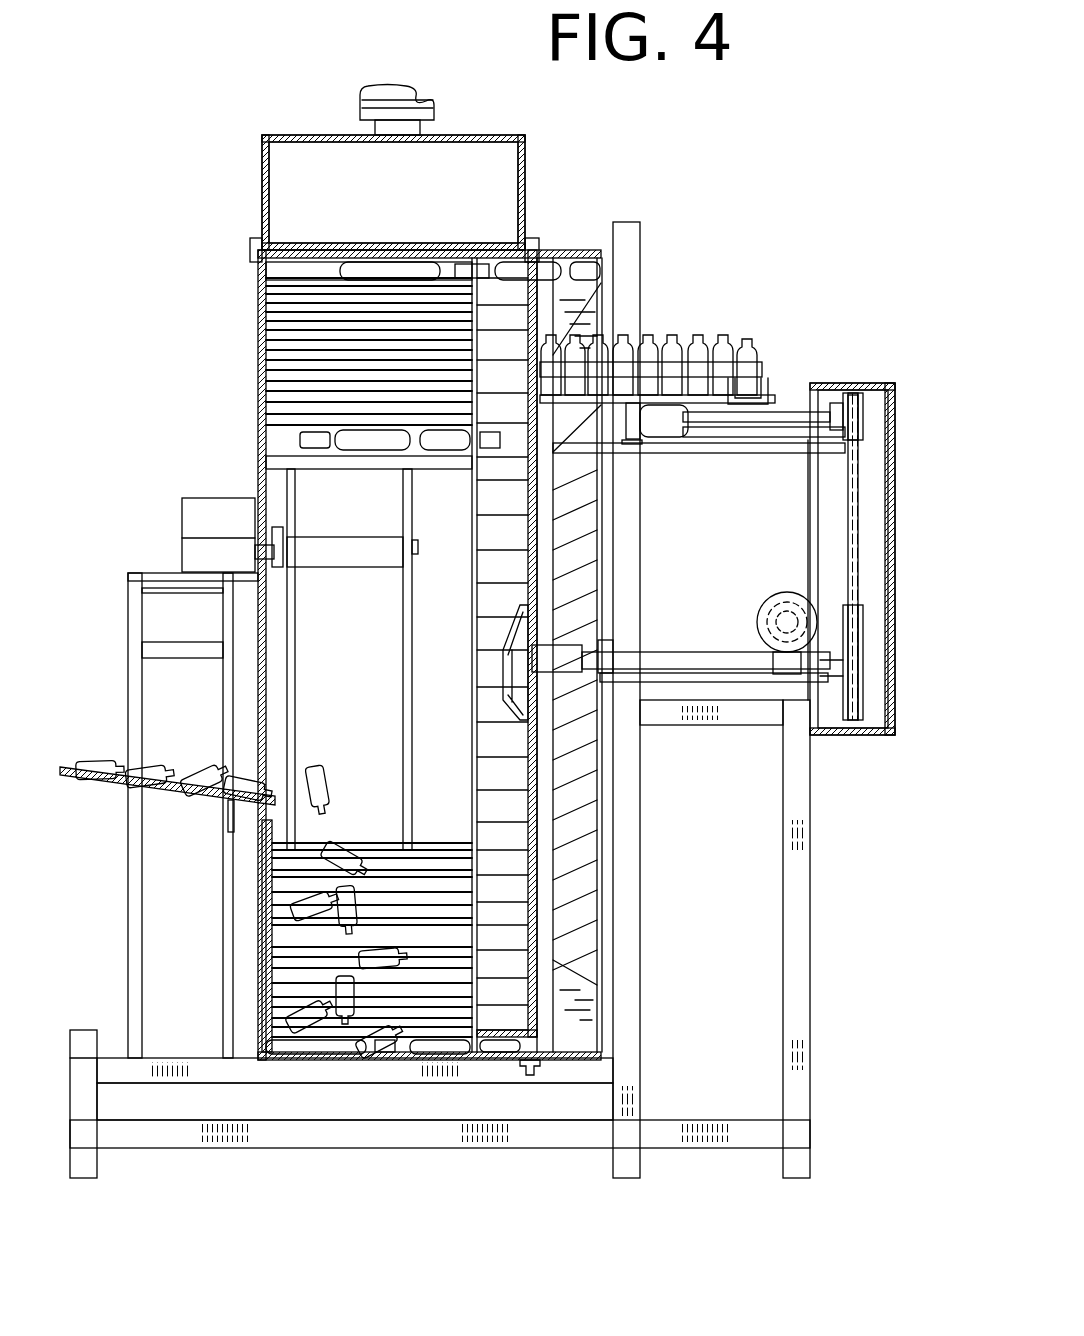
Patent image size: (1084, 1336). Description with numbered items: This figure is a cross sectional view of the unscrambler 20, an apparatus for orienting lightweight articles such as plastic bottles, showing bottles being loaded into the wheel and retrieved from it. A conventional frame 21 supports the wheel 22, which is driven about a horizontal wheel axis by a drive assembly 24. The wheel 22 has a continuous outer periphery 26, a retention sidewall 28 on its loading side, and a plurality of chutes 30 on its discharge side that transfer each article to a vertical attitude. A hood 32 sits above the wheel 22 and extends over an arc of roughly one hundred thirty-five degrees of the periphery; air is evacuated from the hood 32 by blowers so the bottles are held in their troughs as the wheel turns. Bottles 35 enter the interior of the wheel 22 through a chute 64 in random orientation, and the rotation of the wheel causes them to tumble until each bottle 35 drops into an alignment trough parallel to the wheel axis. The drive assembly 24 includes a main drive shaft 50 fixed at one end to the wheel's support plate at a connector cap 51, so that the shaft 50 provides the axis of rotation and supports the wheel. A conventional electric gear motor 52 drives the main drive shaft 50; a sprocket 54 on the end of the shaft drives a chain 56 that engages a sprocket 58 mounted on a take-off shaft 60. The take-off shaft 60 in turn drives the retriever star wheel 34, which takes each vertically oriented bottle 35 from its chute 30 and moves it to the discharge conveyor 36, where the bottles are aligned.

The unscrambler 20 is at (260, 182).
The frame 21 is at (810, 838).
The wheel 22 is at (256, 304).
The drive assembly 24 is at (774, 588).
The outer periphery 26 is at (398, 250).
The retention sidewall 28 is at (258, 364).
The chutes 30 is at (590, 770).
The hood 32 is at (536, 150).
The star wheel 34 is at (652, 332).
The bottle 35 is at (232, 784).
The discharge conveyor 36 is at (760, 378).
The main drive shaft 50 is at (696, 652).
The connector cap 51 is at (506, 624).
The electric gear motor 52 is at (800, 602).
The sprocket 54 is at (844, 686).
The chain 56 is at (858, 474).
The sprocket 58 is at (864, 404).
The take-off shaft 60 is at (780, 416).
The chute 64 is at (80, 782).